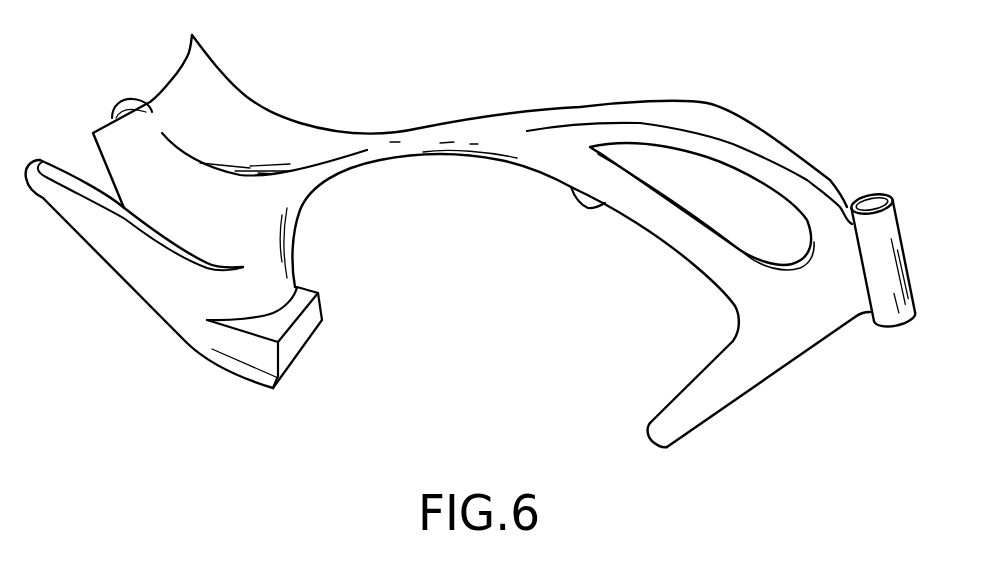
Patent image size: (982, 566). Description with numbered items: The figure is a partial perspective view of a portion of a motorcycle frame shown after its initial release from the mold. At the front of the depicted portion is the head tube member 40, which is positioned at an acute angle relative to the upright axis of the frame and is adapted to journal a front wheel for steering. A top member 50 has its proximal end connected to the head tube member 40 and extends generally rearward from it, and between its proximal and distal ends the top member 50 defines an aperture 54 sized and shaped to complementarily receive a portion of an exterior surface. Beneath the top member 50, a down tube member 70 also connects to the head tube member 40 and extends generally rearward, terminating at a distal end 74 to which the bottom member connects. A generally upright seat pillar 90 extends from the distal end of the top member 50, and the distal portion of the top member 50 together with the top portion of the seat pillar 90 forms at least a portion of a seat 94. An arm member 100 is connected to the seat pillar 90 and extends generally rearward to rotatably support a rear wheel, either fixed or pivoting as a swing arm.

The head tube member 40 is at (870, 194).
The top member 50 is at (543, 178).
The aperture 54 is at (743, 210).
The down tube member 70 is at (700, 370).
The distal end of the down tube member 74 is at (660, 438).
The seat pillar 90 is at (300, 228).
The seat 94 is at (280, 117).
The arm member 100 is at (50, 200).